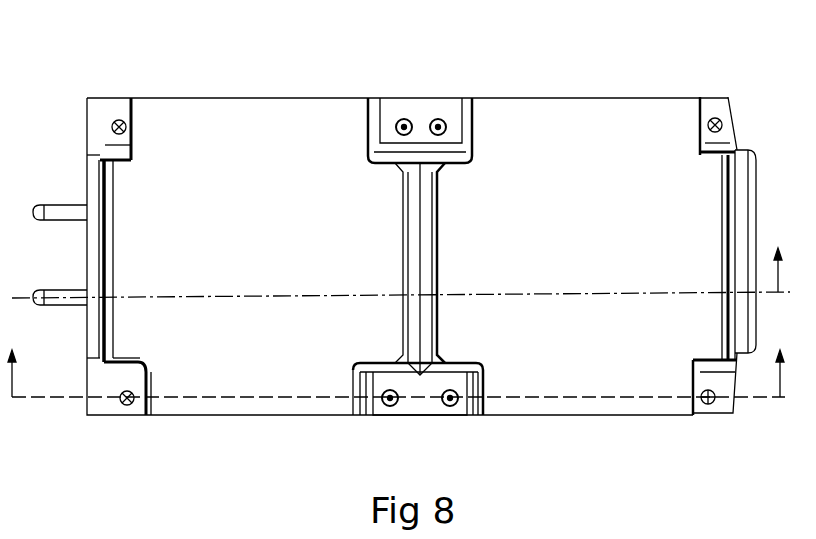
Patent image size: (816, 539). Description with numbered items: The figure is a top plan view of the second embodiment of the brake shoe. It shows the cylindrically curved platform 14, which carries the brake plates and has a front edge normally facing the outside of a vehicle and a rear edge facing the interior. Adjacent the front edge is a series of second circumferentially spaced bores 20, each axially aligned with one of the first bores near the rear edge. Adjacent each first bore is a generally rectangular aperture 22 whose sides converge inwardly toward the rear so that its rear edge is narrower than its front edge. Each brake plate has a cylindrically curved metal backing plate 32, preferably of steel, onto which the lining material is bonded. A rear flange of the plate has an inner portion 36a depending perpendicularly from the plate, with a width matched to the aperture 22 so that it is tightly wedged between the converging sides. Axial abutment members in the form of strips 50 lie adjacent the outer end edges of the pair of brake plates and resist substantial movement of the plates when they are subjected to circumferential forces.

The platform 14 is at (102, 98).
The second circumferentially spaced bores 20 is at (108, 388).
The aperture 22 is at (437, 118).
The metal backing plate 32 is at (286, 418).
The inner portion 36a is at (702, 133).
The strips 50 is at (735, 193).